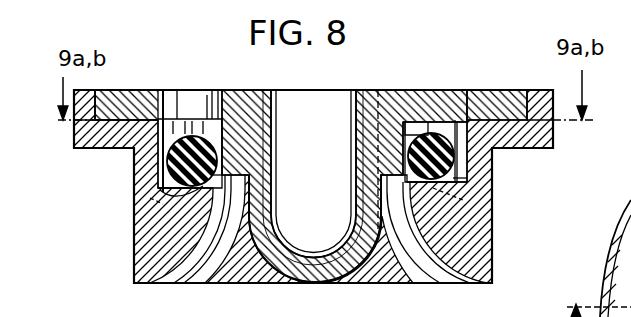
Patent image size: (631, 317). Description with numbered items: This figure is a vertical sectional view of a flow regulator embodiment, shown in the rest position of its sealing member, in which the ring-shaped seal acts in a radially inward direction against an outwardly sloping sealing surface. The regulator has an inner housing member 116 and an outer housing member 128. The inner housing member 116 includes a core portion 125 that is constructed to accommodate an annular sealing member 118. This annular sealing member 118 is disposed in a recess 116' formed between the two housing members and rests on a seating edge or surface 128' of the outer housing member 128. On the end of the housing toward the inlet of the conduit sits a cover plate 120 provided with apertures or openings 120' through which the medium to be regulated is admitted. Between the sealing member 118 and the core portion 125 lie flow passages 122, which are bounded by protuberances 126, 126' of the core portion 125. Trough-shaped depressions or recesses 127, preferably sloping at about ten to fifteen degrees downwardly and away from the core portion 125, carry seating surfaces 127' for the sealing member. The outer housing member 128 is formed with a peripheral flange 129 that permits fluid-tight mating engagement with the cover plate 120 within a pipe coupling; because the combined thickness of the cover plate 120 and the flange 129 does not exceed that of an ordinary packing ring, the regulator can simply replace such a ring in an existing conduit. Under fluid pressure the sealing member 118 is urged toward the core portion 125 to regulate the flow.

The inner housing member 116 is at (186, 108).
The recess 116' is at (435, 98).
The annular sealing member 118 is at (168, 162).
The cover plate 120 is at (491, 123).
The apertures or openings 120' is at (138, 88).
The flow passages 122 is at (224, 144).
The core portion 125 is at (376, 82).
The protuberance 126 is at (426, 110).
The protuberance 126' is at (245, 150).
The trough-shaped depressions or recesses 127 is at (144, 203).
The seating surfaces 127' is at (462, 174).
The outer housing member 128 is at (313, 186).
The seating edge or surface 128' is at (290, 177).
The peripheral flange 129 is at (538, 98).